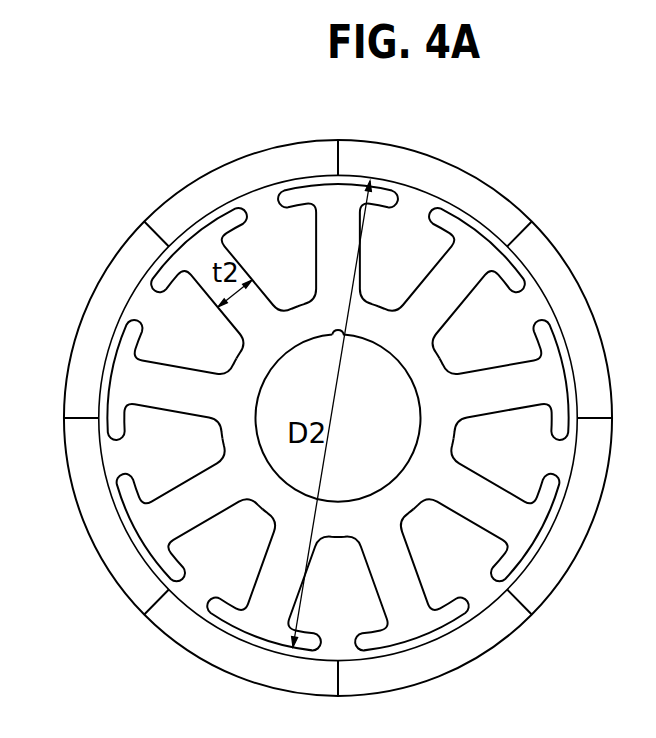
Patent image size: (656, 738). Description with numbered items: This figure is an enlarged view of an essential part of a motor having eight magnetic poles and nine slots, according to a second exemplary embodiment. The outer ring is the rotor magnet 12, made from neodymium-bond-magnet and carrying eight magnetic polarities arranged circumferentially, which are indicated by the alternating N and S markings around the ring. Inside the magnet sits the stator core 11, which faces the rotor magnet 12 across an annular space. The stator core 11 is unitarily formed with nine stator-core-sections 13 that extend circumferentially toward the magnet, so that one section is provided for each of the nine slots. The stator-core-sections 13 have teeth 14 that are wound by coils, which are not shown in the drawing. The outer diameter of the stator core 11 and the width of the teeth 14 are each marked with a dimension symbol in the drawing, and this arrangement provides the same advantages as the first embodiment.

The stator core 11 is at (398, 333).
The rotor magnet 12 is at (543, 255).
The stator-core-sections 13 is at (323, 197).
The teeth 14 is at (153, 383).